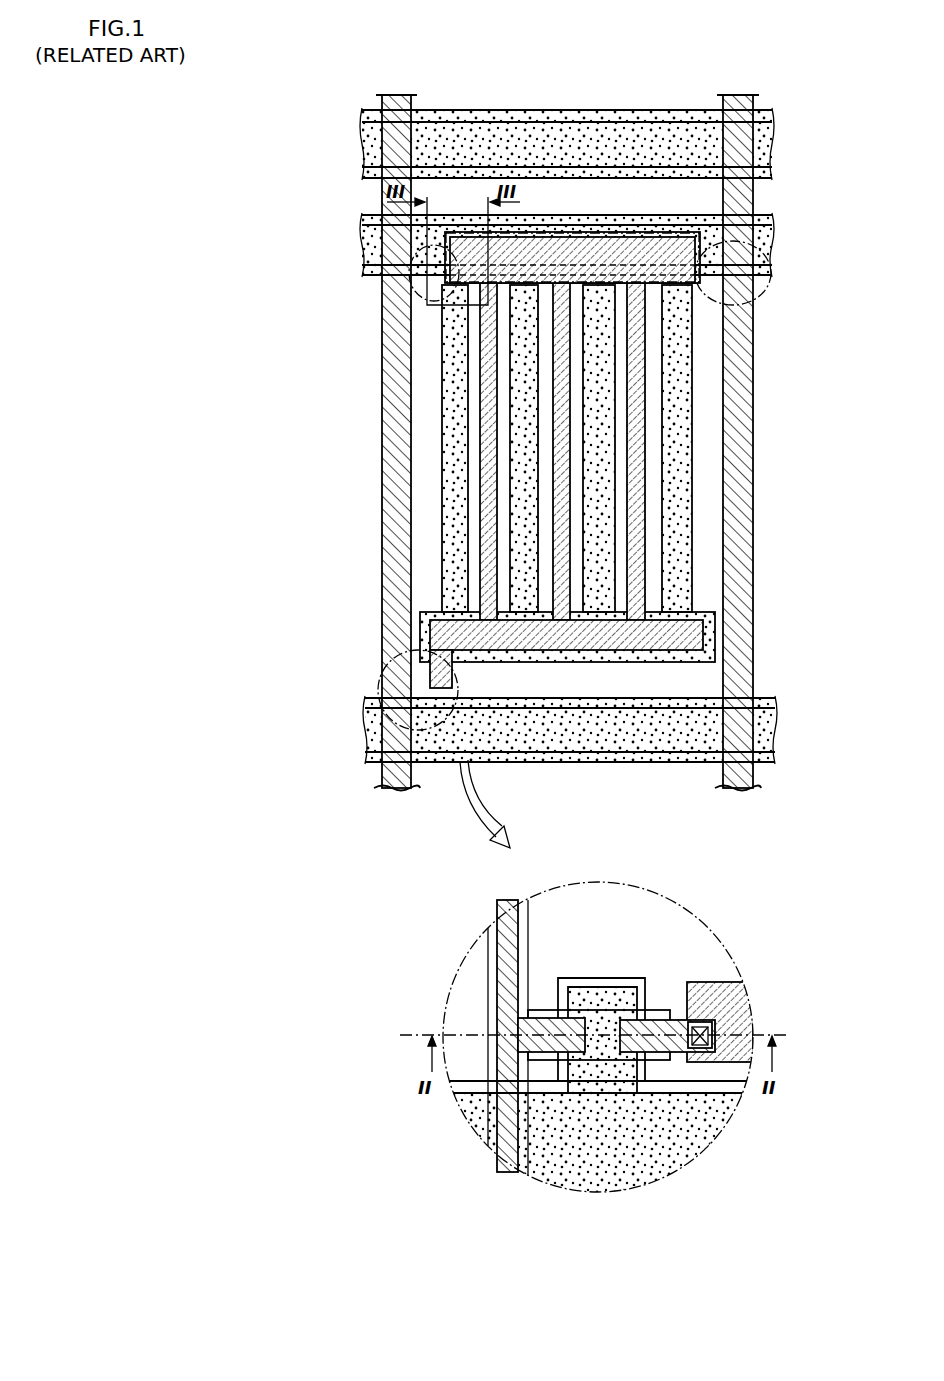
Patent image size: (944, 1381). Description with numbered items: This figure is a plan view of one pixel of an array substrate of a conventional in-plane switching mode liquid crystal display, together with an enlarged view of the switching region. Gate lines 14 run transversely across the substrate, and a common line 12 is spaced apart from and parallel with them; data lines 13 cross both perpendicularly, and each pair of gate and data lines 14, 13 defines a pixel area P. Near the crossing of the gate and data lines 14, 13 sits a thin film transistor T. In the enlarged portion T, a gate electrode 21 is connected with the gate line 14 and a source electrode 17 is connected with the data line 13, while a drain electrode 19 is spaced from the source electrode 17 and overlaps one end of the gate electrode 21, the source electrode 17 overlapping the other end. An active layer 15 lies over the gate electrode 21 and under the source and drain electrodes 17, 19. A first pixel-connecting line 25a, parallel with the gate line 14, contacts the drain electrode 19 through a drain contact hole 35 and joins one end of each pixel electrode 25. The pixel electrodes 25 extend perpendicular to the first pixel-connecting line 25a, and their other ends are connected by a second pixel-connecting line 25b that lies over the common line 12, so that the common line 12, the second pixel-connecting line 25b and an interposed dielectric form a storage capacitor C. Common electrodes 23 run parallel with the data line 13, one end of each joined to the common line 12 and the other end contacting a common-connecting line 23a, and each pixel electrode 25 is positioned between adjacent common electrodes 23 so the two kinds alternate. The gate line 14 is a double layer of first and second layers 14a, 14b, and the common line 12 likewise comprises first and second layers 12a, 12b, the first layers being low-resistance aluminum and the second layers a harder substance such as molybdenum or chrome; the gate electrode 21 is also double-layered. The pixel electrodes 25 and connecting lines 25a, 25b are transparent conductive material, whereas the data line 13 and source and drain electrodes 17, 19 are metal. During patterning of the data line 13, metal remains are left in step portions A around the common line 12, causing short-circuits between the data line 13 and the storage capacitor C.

The common line 12 is at (803, 245).
The first layer of common line 12a is at (757, 256).
The second layer of common line 12b is at (757, 277).
The data line 13 is at (382, 292).
The gate line 14 is at (332, 145).
The first layer of gate line 14a is at (757, 758).
The second layer of gate line 14b is at (700, 762).
The active layer 15 is at (667, 1008).
The source electrode 17 is at (540, 1015).
The drain electrode 19 is at (718, 1000).
The gate electrode 21 is at (602, 971).
The common electrode 23 is at (695, 392).
The common-connecting line 23a is at (420, 632).
The pixel electrode 25 is at (647, 475).
The first pixel-connecting line 25a is at (703, 633).
The second pixel-connecting line 25b is at (580, 233).
The drain contact hole 35 is at (713, 1050).
The step portions A is at (417, 288).
The storage capacitor C is at (630, 230).
The pixel area P is at (417, 420).
The thin film transistor T is at (378, 677).